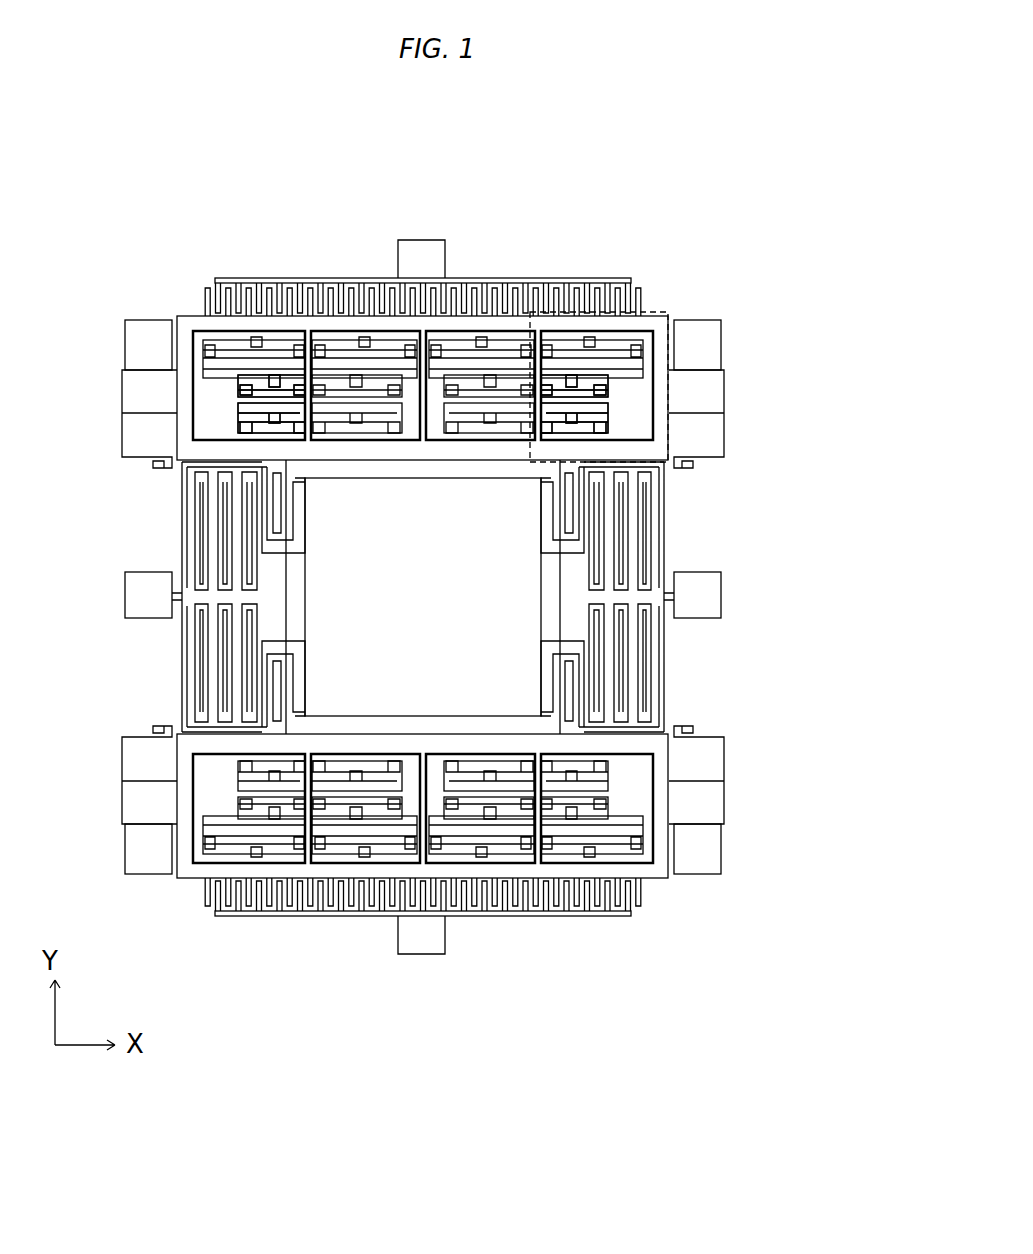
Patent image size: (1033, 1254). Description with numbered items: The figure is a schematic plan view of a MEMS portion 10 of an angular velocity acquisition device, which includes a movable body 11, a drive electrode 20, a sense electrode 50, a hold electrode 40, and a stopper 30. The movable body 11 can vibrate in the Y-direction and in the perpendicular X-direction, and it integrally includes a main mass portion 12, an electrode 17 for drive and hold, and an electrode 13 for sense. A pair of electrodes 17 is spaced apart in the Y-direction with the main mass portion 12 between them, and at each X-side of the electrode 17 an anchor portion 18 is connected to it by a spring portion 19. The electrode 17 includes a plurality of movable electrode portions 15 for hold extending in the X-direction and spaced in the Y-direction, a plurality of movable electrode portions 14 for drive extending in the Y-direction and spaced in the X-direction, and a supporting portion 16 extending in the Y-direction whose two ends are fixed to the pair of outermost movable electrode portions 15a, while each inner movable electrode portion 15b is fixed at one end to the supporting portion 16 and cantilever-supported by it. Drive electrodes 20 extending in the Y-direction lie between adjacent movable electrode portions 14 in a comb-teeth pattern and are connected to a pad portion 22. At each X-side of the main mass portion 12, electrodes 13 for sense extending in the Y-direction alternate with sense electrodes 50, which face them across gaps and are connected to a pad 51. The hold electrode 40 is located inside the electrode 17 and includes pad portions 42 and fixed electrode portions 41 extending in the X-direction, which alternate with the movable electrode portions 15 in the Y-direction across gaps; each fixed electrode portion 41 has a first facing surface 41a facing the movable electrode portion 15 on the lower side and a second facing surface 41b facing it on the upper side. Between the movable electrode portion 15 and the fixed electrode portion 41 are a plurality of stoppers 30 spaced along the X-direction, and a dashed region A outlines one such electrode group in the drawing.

The MEMS portion 10 is at (728, 150).
The movable body 11 is at (193, 884).
The main mass portion 12 is at (490, 598).
The electrode for sense 13 is at (210, 535).
The movable electrode portion for drive 14 is at (480, 300).
The movable electrode portion for hold 15 is at (440, 580).
The outermost movable electrode portion 15a is at (568, 330).
The inner movable electrode portion 15b is at (278, 367).
The supporting portion 16 is at (530, 330).
The electrode for drive and hold 17 is at (180, 314).
The anchor portion 18 is at (150, 342).
The spring portion 19 is at (150, 415).
The drive electrode 20 is at (281, 286).
The pad portion 22 is at (421, 262).
The stopper 30 is at (317, 388).
The hold electrode 40 is at (220, 336).
The fixed electrode portion 41 is at (348, 340).
The first facing surface 41a is at (275, 402).
The second facing surface 41b is at (258, 377).
The pad portion 42 is at (420, 395).
The sense electrode 50 is at (200, 640).
The pad 51 is at (130, 595).
The region A is at (655, 312).